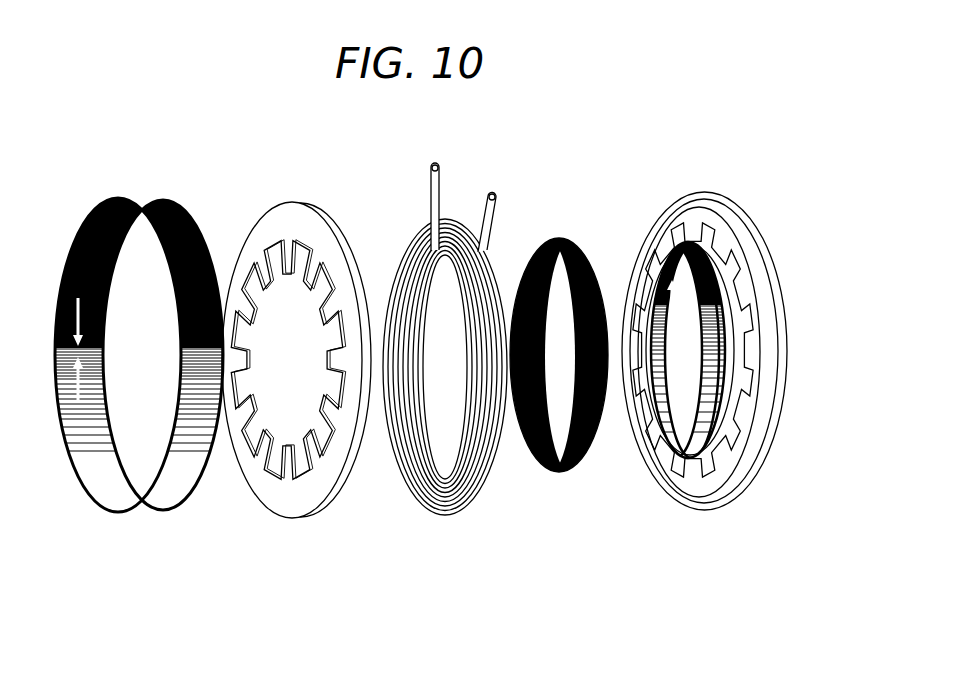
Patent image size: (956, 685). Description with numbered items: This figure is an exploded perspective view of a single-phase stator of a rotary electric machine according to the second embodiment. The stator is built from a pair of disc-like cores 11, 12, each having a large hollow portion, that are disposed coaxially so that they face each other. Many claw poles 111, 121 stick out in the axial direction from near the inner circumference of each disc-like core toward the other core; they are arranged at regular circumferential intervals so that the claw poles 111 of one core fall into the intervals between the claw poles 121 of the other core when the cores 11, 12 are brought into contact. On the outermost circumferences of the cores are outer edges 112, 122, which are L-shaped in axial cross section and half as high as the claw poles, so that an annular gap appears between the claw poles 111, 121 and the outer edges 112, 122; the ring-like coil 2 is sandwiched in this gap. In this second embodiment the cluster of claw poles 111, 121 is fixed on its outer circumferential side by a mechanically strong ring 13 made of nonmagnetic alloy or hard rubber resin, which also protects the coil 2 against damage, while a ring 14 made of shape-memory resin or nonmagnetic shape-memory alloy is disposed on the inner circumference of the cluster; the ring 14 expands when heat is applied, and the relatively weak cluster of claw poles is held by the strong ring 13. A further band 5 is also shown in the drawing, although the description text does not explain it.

The shrinkage band 5 is at (138, 198).
The disc-like core 11 is at (296, 364).
The claw poles 111 is at (250, 380).
The outer edge 112 is at (308, 208).
The ring-like coil 2 is at (443, 517).
The ring 13 is at (558, 238).
The disc-like core 12 is at (721, 335).
The claw poles 121 is at (755, 312).
The outer edge 122 is at (718, 192).
The ring 14 is at (753, 410).